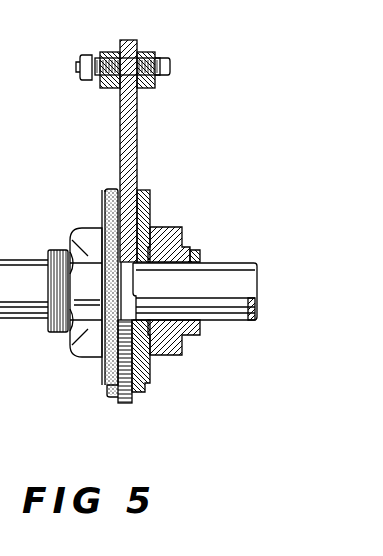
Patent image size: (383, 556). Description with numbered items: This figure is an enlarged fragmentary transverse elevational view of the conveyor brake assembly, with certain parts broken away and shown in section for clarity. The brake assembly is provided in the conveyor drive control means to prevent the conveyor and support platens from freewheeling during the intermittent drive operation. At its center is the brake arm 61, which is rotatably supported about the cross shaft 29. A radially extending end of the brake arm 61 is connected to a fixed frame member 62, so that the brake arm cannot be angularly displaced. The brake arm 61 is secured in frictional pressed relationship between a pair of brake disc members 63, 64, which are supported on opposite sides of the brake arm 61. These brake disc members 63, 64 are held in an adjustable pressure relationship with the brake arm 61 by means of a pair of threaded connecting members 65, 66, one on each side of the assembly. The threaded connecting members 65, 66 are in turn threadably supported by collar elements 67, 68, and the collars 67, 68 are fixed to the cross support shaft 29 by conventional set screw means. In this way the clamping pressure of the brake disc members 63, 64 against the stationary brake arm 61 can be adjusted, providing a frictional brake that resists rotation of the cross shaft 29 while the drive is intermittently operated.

The cross shaft 29 is at (222, 276).
The brake arm 61 is at (138, 138).
The fixed frame member 62 is at (150, 54).
The brake disc member 63 is at (112, 188).
The brake disc member 64 is at (143, 190).
The threaded connecting member 65 is at (93, 227).
The threaded connecting member 66 is at (165, 227).
The collar element 67 is at (49, 250).
The collar element 68 is at (185, 251).